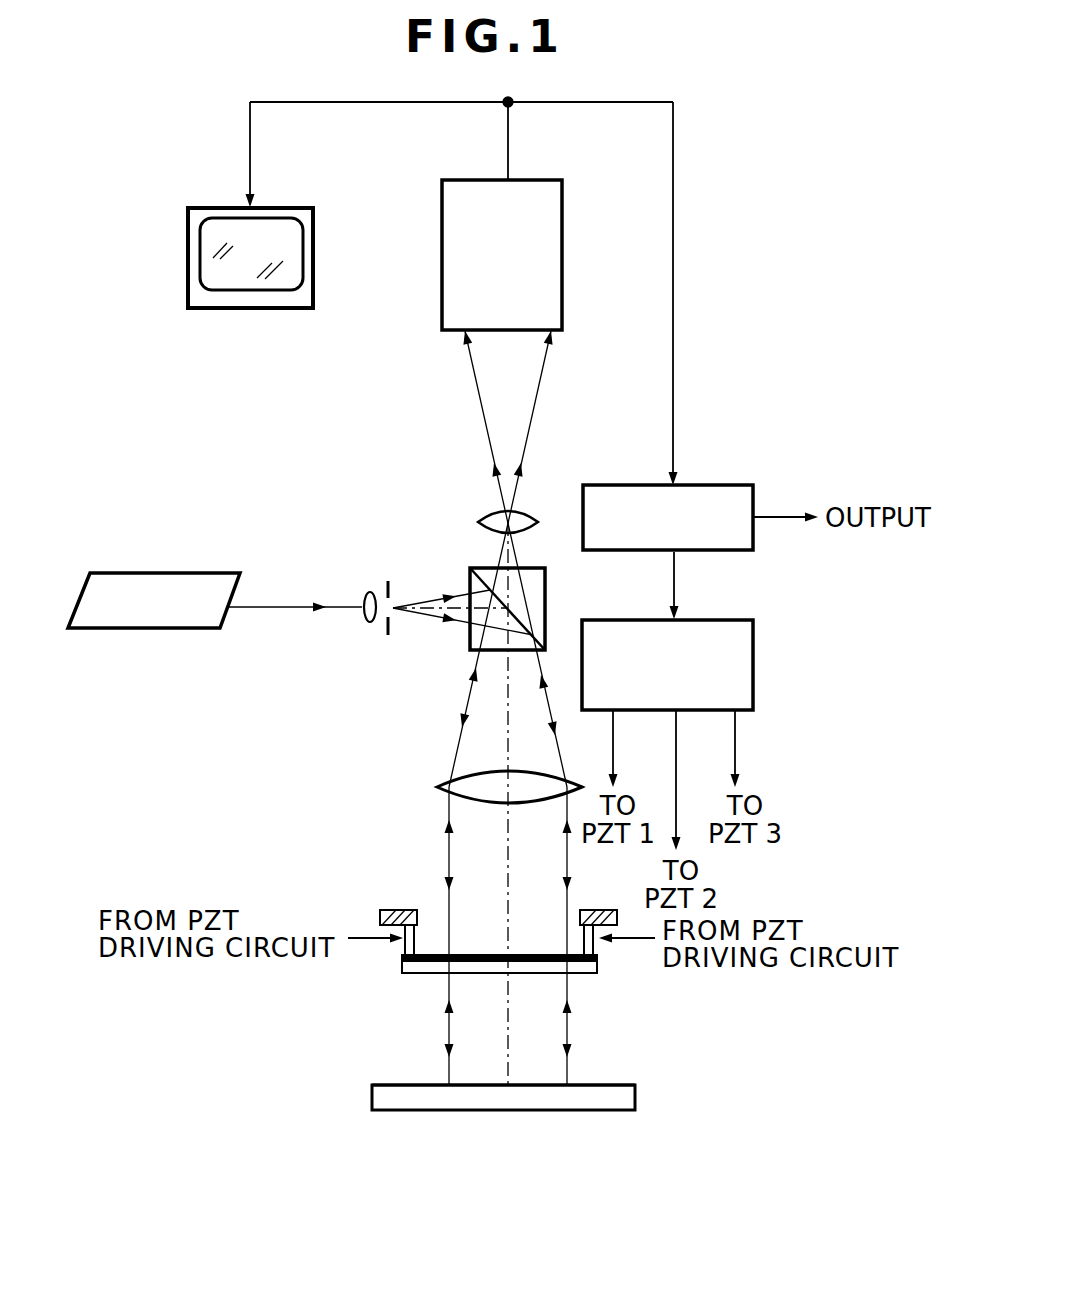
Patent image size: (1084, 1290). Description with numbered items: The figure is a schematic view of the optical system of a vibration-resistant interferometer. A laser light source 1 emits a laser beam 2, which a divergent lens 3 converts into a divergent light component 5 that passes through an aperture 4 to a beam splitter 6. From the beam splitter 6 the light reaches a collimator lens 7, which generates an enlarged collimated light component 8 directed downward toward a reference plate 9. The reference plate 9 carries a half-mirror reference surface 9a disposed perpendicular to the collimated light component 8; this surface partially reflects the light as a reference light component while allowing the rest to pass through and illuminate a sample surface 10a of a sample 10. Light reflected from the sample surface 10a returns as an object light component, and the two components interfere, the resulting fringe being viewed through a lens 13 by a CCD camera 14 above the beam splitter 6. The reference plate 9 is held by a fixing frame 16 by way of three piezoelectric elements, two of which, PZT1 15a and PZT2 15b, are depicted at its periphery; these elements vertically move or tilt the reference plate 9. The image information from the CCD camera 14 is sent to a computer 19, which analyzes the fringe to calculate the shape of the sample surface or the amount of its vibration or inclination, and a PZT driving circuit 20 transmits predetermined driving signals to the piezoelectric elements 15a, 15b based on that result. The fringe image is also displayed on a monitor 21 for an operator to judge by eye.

The laser light source 1 is at (178, 573).
The laser beam 2 is at (266, 605).
The divergent lens 3 is at (365, 622).
The aperture 4 is at (385, 583).
The divergent light component 5 is at (443, 598).
The beam splitter 6 is at (547, 612).
The collimator lens 7 is at (470, 775).
The collimated light component 8 is at (447, 856).
The reference plate 9 is at (545, 975).
The reference surface 9a is at (540, 952).
The sample 10 is at (635, 1097).
The sample surface 10a is at (595, 1083).
The lens 13 is at (484, 516).
The CCD camera 14 is at (562, 243).
The piezoelectric element PZT1 15a is at (400, 945).
The piezoelectric element PZT2 15b is at (596, 944).
The fixing frame 16 is at (403, 910).
The computer 19 is at (632, 483).
The PZT driving circuit 20 is at (644, 618).
The monitor 21 is at (277, 310).